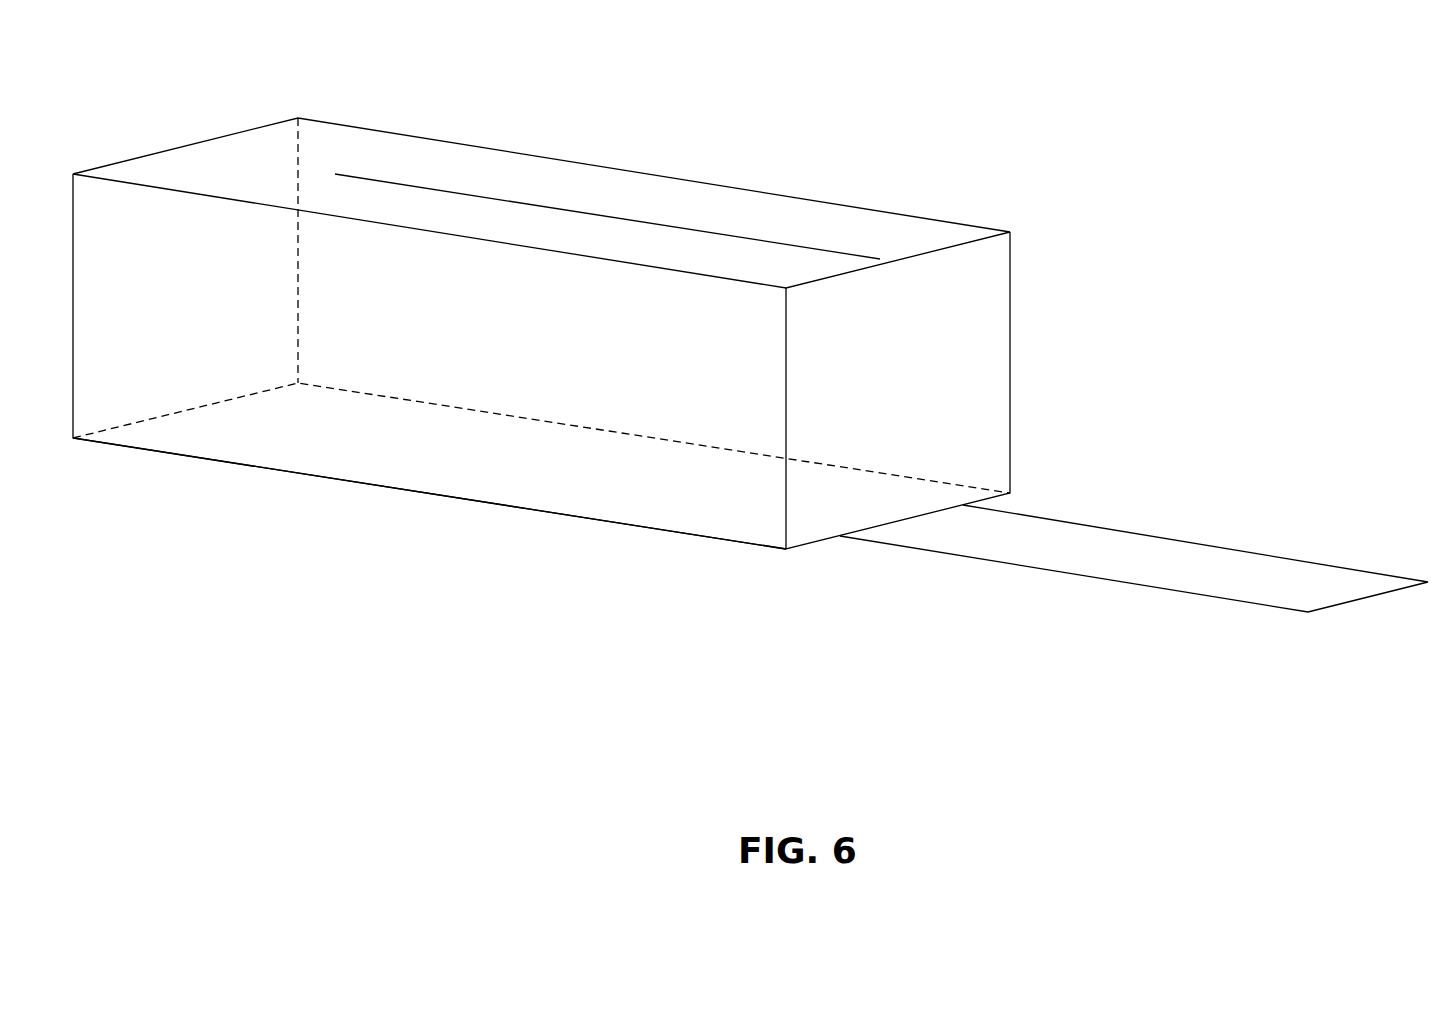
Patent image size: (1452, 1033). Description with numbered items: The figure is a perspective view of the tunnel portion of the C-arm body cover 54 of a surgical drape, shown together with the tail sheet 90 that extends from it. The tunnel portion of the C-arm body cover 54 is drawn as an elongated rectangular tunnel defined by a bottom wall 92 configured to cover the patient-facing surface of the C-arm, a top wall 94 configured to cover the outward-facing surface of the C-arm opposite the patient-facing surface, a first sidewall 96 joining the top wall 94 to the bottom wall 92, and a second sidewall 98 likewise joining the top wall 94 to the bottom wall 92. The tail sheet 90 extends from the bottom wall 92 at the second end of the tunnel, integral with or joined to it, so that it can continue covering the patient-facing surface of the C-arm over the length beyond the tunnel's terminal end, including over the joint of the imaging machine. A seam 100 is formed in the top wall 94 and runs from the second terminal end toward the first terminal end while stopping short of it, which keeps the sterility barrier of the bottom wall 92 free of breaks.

The C-arm body cover 54 is at (561, 626).
The tail sheet 90 is at (1067, 575).
The bottom wall 92 is at (523, 483).
The top wall 94 is at (261, 155).
The first sidewall 96 is at (298, 418).
The second sidewall 98 is at (1010, 334).
The seam 100 is at (692, 228).